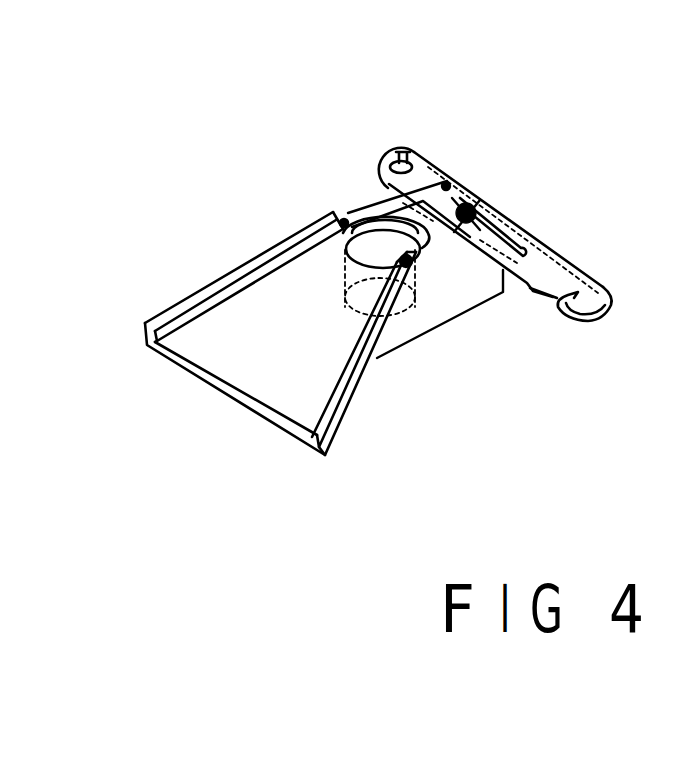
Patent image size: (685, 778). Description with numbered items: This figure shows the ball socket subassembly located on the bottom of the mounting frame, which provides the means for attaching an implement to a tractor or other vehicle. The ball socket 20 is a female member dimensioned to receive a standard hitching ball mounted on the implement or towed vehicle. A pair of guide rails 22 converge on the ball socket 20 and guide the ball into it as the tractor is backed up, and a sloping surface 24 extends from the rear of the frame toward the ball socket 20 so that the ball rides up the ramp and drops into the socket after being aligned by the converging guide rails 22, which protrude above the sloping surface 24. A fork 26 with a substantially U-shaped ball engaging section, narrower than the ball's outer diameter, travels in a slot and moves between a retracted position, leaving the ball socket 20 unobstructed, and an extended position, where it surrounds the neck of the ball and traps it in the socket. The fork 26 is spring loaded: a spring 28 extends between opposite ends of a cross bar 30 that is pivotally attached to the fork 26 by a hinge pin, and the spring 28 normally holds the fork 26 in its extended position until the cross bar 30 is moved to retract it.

The ball socket 20 is at (377, 250).
The guide rails 22 is at (225, 275).
The sloping surface 24 is at (250, 367).
The fork 26 is at (408, 258).
The spring 28 is at (467, 195).
The cross bar 30 is at (557, 253).